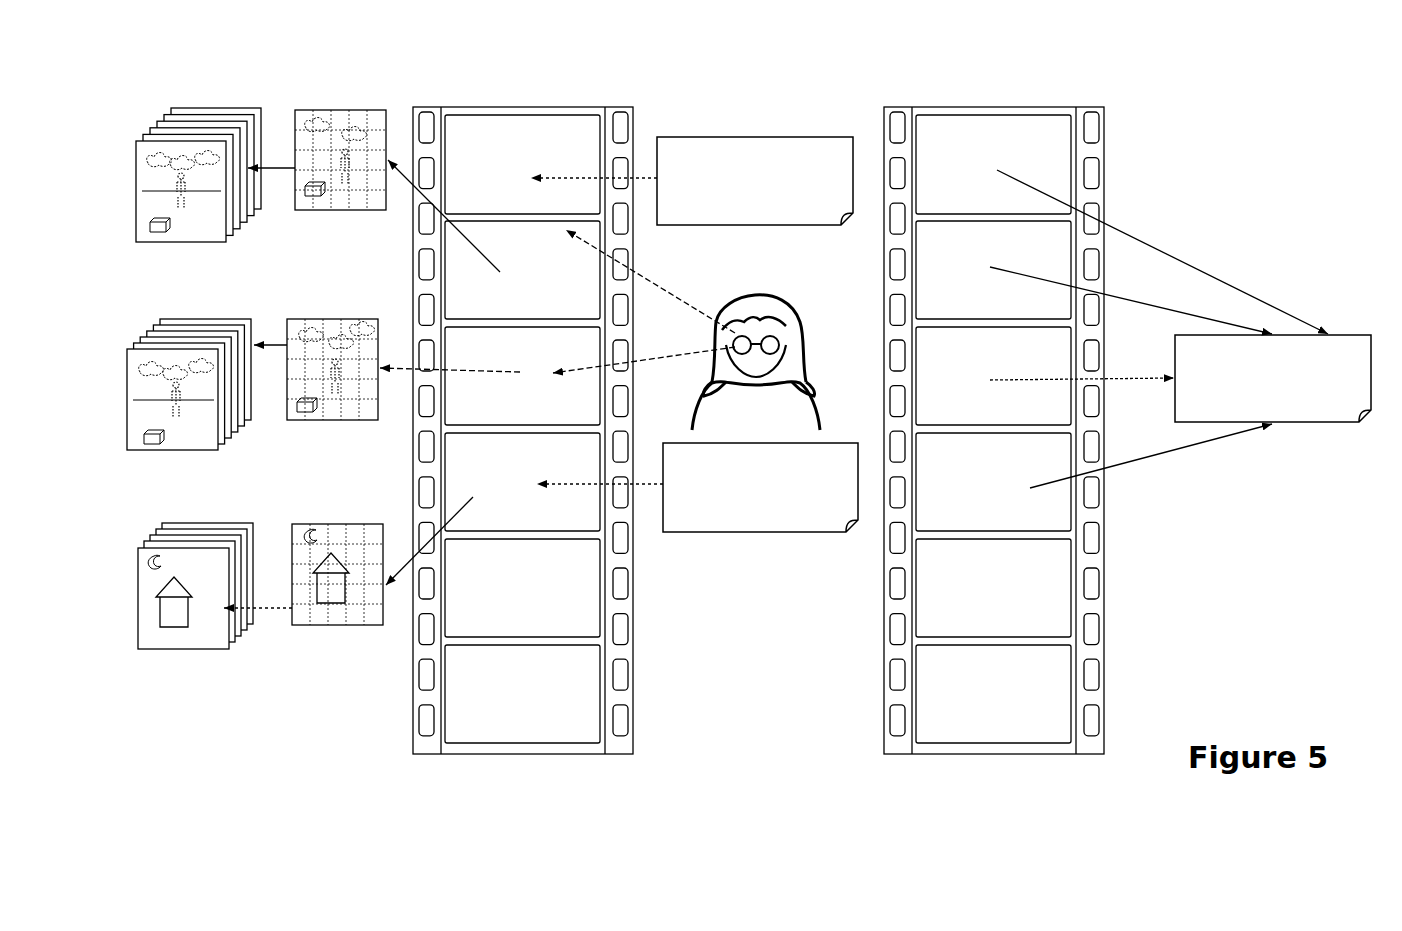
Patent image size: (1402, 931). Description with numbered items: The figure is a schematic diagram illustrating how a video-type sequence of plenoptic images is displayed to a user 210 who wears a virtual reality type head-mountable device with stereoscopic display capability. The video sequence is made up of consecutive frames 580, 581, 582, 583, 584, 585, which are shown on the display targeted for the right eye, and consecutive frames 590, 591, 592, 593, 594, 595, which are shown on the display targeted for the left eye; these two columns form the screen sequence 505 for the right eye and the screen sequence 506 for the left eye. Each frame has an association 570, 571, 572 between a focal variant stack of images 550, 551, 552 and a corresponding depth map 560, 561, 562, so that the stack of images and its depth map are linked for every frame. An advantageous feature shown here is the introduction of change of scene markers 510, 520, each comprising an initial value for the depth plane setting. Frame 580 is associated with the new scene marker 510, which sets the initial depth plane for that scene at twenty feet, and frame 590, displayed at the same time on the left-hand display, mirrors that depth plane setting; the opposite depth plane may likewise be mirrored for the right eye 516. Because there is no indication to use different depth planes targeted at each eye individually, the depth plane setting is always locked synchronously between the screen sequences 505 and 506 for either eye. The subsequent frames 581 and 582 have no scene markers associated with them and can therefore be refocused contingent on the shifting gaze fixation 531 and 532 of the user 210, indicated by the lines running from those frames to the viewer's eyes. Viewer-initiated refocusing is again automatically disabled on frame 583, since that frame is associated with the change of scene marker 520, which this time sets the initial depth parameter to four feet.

The user 210 is at (754, 290).
The screen sequence for the right eye 505 is at (641, 131).
The screen sequence for the left eye 506 is at (1108, 165).
The change of scene marker 510 is at (757, 137).
The mirrored opposite depth plane for the right eye 516 is at (1352, 335).
The change of scene marker 520 is at (775, 534).
The gaze fixation shift 531 is at (693, 304).
The gaze fixation shift 532 is at (639, 360).
The focal variant stack of images 550 is at (259, 138).
The focal variant stack of images 551 is at (202, 318).
The focal variant stack of images 552 is at (254, 541).
The depth map 560 is at (382, 136).
The depth map 561 is at (346, 320).
The depth map 562 is at (333, 525).
The association 570 is at (286, 169).
The association 571 is at (278, 347).
The association 572 is at (280, 612).
The frame 580 is at (522, 164).
The frame 581 is at (522, 270).
The frame 582 is at (522, 376).
The frame 583 is at (522, 482).
The frame 584 is at (522, 588).
The frame 585 is at (522, 694).
The frame 590 is at (993, 164).
The frame 591 is at (993, 270).
The frame 592 is at (993, 376).
The frame 593 is at (993, 482).
The frame 594 is at (993, 588).
The frame 595 is at (993, 694).